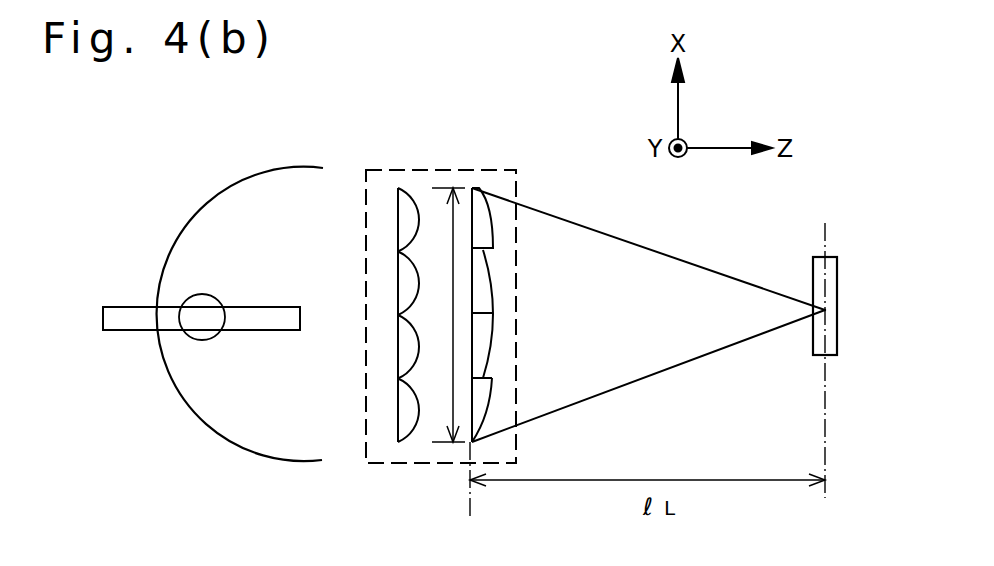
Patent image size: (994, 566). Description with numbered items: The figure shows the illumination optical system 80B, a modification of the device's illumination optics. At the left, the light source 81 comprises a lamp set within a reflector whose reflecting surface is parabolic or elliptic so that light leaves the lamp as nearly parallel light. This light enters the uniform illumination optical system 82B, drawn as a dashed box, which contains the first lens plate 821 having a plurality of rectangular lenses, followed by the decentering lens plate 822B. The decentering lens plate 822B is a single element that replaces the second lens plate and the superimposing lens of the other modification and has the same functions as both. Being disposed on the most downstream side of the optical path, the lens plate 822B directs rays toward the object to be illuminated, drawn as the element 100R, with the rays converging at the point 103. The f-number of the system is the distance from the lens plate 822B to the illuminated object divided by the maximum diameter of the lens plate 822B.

The illumination optical system 80B is at (216, 260).
The light source 81 is at (217, 205).
The uniform illumination optical system 82B is at (433, 170).
The first lens plate 821 is at (406, 430).
The decentering lens plate 822B is at (488, 420).
The reflective light valve 100R is at (813, 257).
The light incident point (pixel) 103 is at (829, 314).